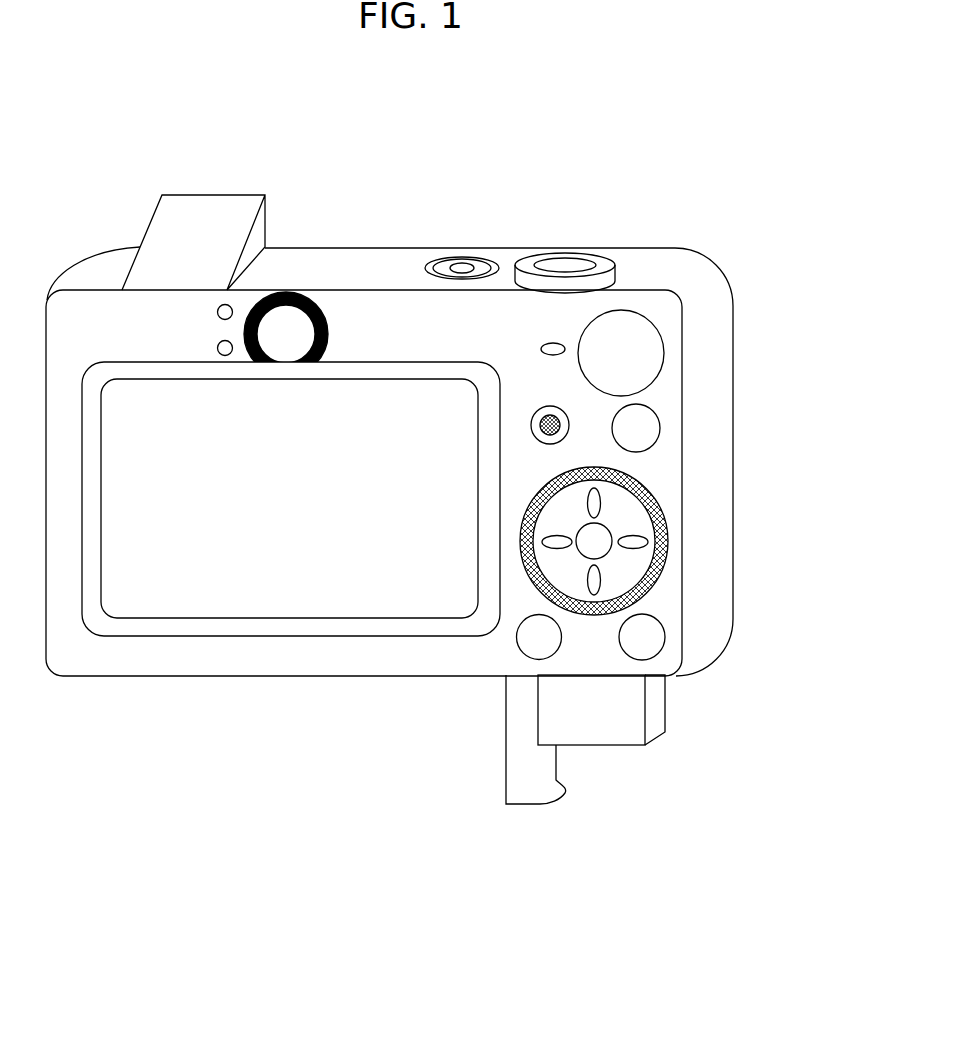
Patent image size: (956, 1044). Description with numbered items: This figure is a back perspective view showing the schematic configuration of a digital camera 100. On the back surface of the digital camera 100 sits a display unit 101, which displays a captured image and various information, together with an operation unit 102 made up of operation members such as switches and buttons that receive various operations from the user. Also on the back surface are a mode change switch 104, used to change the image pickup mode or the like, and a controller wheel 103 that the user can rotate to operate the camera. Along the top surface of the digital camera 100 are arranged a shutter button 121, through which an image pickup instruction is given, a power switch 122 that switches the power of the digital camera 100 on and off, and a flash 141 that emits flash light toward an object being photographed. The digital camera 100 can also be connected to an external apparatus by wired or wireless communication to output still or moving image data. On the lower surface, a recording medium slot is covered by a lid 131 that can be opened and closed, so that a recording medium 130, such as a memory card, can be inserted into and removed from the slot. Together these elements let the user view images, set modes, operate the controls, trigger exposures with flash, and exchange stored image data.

The digital camera 100 is at (160, 710).
The display unit 101 is at (325, 600).
The operation unit 102 is at (562, 432).
The controller wheel 103 is at (530, 570).
The mode change switch 104 is at (637, 325).
The shutter button 121 is at (562, 265).
The power switch 122 is at (462, 270).
The recording medium 130 is at (627, 713).
The lid 131 is at (535, 790).
The flash 141 is at (215, 212).